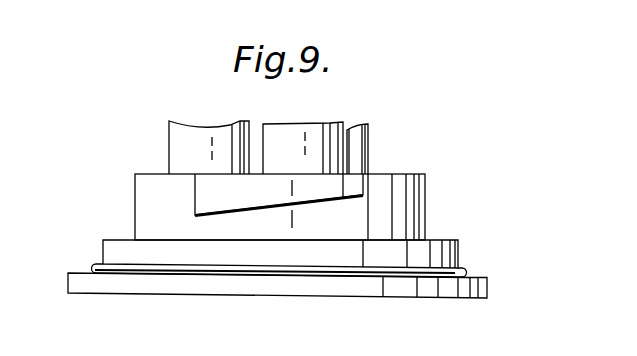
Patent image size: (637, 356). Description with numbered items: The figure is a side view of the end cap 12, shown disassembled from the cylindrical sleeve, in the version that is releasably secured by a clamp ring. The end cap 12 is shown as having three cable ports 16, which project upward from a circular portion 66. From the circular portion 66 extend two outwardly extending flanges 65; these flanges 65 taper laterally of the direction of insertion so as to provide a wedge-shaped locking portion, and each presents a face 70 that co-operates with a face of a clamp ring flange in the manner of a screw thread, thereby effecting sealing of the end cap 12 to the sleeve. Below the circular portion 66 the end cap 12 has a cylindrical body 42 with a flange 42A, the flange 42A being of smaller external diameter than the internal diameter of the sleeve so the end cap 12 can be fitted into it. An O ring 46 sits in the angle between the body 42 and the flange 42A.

The end cap 12 is at (436, 156).
The cable port 16 is at (207, 132).
The cylindrical body 42 is at (108, 248).
The flange 42A is at (95, 283).
The O ring 46 is at (462, 270).
The outwardly extending flange 65 is at (215, 182).
The circular portion 66 is at (408, 208).
The face 70 is at (226, 210).